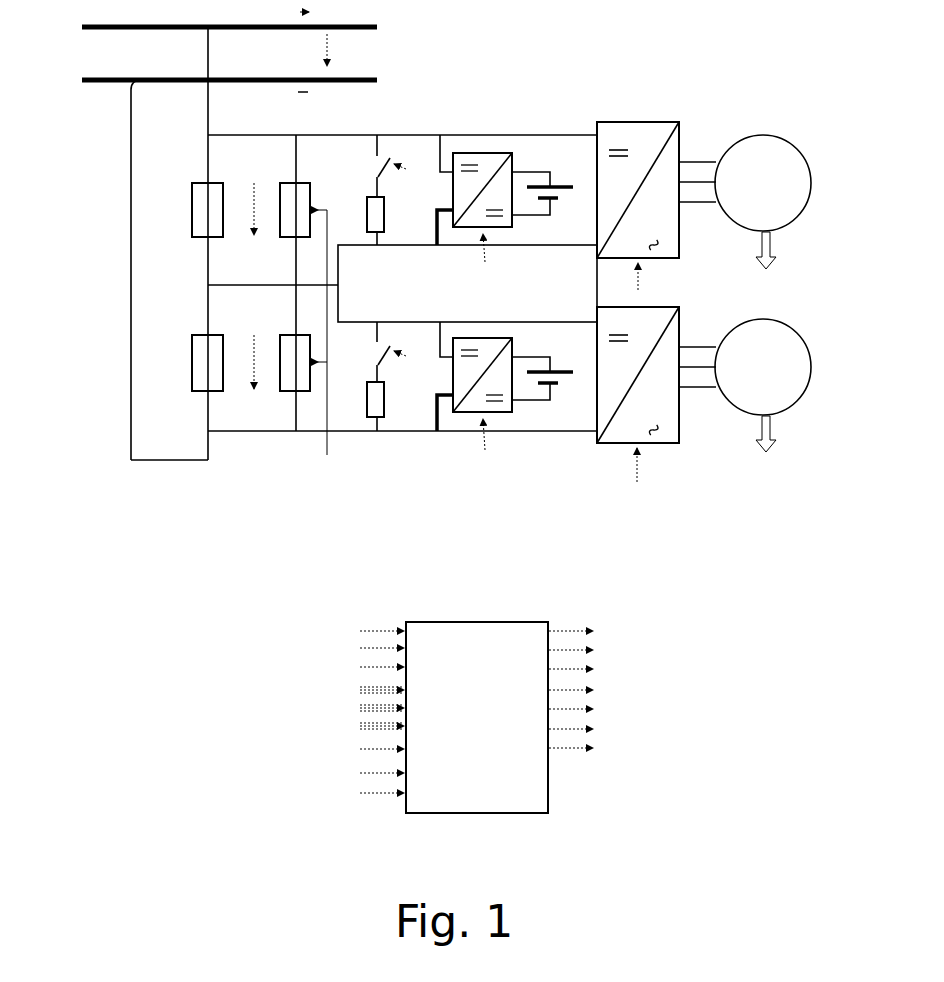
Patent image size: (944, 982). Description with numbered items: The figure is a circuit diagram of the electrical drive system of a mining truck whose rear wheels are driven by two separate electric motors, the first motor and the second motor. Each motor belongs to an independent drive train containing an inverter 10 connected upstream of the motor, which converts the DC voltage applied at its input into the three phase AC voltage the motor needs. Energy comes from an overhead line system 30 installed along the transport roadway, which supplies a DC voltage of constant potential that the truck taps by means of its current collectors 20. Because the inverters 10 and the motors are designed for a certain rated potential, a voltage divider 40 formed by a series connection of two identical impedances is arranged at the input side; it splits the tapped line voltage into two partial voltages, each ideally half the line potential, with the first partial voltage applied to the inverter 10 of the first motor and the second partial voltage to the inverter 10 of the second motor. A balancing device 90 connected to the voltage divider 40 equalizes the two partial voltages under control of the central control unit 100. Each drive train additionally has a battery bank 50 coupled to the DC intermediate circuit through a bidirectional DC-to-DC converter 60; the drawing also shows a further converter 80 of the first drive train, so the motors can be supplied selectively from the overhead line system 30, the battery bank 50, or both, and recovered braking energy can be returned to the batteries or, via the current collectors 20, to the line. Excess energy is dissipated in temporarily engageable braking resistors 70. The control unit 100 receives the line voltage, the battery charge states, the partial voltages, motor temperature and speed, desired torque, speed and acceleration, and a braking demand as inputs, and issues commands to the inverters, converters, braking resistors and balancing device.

The inverter 10 is at (641, 134).
The current collector 20 is at (133, 118).
The overhead line system 30 is at (377, 30).
The voltage divider 40 is at (191, 232).
The battery bank 50 is at (530, 215).
The DC-to-DC converter 60 is at (505, 410).
The braking resistor 70 is at (384, 214).
The DC/DC converter 1 80 is at (482, 150).
The balancing device 90 is at (283, 235).
The control unit 100 is at (518, 630).